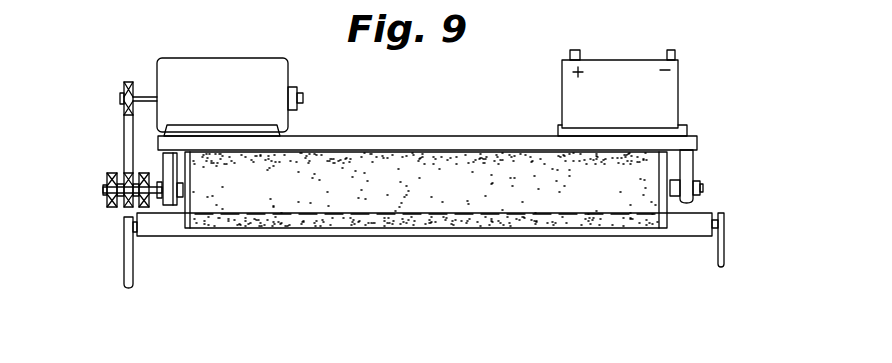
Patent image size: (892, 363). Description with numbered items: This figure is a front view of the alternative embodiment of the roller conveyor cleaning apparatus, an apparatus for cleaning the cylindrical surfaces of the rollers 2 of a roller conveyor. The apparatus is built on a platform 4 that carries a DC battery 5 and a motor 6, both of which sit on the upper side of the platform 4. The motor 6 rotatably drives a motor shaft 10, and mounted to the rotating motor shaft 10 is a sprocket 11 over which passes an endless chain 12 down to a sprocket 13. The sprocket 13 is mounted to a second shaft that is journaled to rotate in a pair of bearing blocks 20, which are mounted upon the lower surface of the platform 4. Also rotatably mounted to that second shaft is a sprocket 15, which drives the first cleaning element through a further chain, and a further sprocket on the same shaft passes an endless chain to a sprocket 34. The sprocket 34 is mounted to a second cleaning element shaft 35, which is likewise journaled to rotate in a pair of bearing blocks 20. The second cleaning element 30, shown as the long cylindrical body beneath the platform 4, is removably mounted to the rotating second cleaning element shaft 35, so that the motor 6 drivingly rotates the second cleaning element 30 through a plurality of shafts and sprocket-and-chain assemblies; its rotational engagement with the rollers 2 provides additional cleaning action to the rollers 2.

The rollers 2 is at (678, 237).
The platform 4 is at (428, 136).
The DC battery 5 is at (628, 60).
The motor 6 is at (237, 60).
The motor shaft 10 is at (303, 98).
The sprocket 11 is at (124, 82).
The endless chain 12 is at (124, 130).
The sprocket 13 is at (127, 207).
The sprocket 15 is at (143, 173).
The bearing blocks 20 is at (168, 205).
The second cleaning element 30 is at (452, 228).
The sprocket 34 is at (110, 207).
The second cleaning element shaft 35 is at (705, 190).